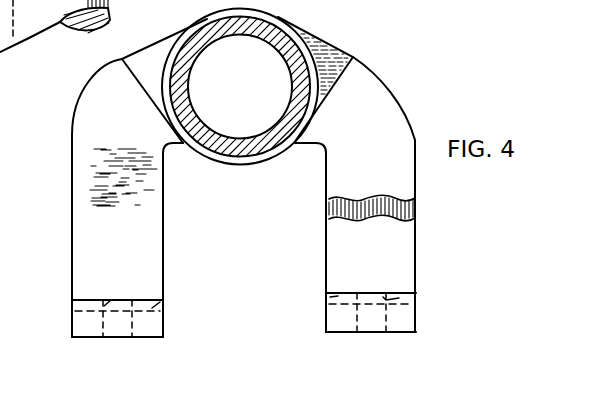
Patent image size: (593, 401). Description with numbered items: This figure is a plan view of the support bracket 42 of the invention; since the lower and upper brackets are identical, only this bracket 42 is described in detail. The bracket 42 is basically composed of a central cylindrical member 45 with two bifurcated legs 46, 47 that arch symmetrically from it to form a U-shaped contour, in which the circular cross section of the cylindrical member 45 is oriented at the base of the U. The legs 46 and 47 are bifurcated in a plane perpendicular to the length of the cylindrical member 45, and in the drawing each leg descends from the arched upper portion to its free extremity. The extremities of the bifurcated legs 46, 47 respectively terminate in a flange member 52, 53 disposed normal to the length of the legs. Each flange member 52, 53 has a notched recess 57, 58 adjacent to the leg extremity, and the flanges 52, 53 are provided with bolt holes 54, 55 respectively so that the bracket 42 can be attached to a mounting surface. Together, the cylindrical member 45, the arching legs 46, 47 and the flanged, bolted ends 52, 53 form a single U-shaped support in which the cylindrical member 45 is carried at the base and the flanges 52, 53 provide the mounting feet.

The lower bracket 42 is at (66, 131).
The central cylindrical member 45 is at (280, 57).
The bifurcated leg 46 is at (395, 123).
The bifurcated leg 47 is at (95, 183).
The flange member 52 is at (407, 322).
The flange member 53 is at (84, 322).
The bolt hole 54 is at (383, 296).
The bolt hole 55 is at (112, 300).
The notched recess 57 is at (168, 293).
The notched recess 58 is at (325, 291).